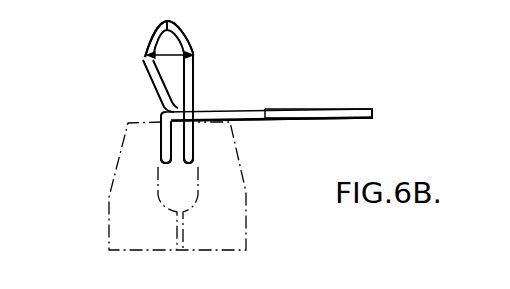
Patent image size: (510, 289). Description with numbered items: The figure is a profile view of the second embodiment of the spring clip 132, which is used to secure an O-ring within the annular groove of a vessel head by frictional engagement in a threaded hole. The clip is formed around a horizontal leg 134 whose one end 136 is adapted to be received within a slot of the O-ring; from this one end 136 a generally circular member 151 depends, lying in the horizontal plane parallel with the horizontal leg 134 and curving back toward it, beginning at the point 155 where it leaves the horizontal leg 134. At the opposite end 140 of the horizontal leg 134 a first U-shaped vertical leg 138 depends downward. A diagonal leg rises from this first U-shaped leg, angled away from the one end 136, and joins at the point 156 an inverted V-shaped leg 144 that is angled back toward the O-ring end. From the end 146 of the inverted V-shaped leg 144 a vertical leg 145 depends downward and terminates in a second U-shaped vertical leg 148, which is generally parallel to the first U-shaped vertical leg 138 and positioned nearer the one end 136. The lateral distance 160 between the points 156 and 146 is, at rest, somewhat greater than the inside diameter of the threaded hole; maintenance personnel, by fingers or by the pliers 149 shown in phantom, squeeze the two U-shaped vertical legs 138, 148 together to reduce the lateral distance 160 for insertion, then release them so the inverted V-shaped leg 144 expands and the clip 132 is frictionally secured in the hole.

The spring clip 132 is at (298, 47).
The horizontal leg 134 is at (232, 109).
The one end of the horizontal leg 136 is at (312, 108).
The first U-shaped vertical leg 138 is at (162, 142).
The opposite end of the horizontal leg 140 is at (157, 108).
The inverted V-shaped leg 144 is at (151, 43).
The vertical leg 145 is at (191, 80).
The end of the inverted V-shaped leg 146 is at (196, 57).
The second U-shaped vertical leg 148 is at (195, 142).
The pliers 149 is at (109, 222).
The circular member 151 is at (366, 109).
The point where the circular member begins 155 is at (266, 109).
The point where the diagonal leg joins the inverted V-shaped member 156 is at (146, 57).
The lateral distance 160 is at (172, 50).